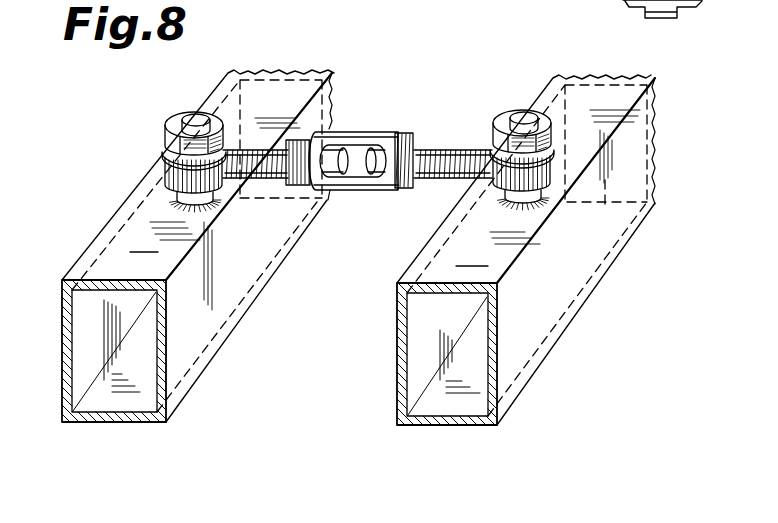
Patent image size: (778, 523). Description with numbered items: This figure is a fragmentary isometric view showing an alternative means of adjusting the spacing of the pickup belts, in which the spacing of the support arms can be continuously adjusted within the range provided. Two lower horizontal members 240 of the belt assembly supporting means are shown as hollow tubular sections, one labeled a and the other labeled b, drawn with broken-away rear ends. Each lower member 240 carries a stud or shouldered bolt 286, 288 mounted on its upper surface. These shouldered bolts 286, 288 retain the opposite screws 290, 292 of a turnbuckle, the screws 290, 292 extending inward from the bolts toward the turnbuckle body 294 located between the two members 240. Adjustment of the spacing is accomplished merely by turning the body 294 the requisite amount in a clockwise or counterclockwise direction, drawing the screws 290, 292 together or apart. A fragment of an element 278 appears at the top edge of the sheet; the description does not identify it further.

The lower horizontal member 240 is at (397, 362).
The bolt 278 is at (613, 1).
The shouldered bolt 286 is at (187, 113).
The shouldered bolt 288 is at (520, 113).
The screw 290 is at (252, 147).
The screw 292 is at (453, 178).
The turnbuckle body 294 is at (358, 190).